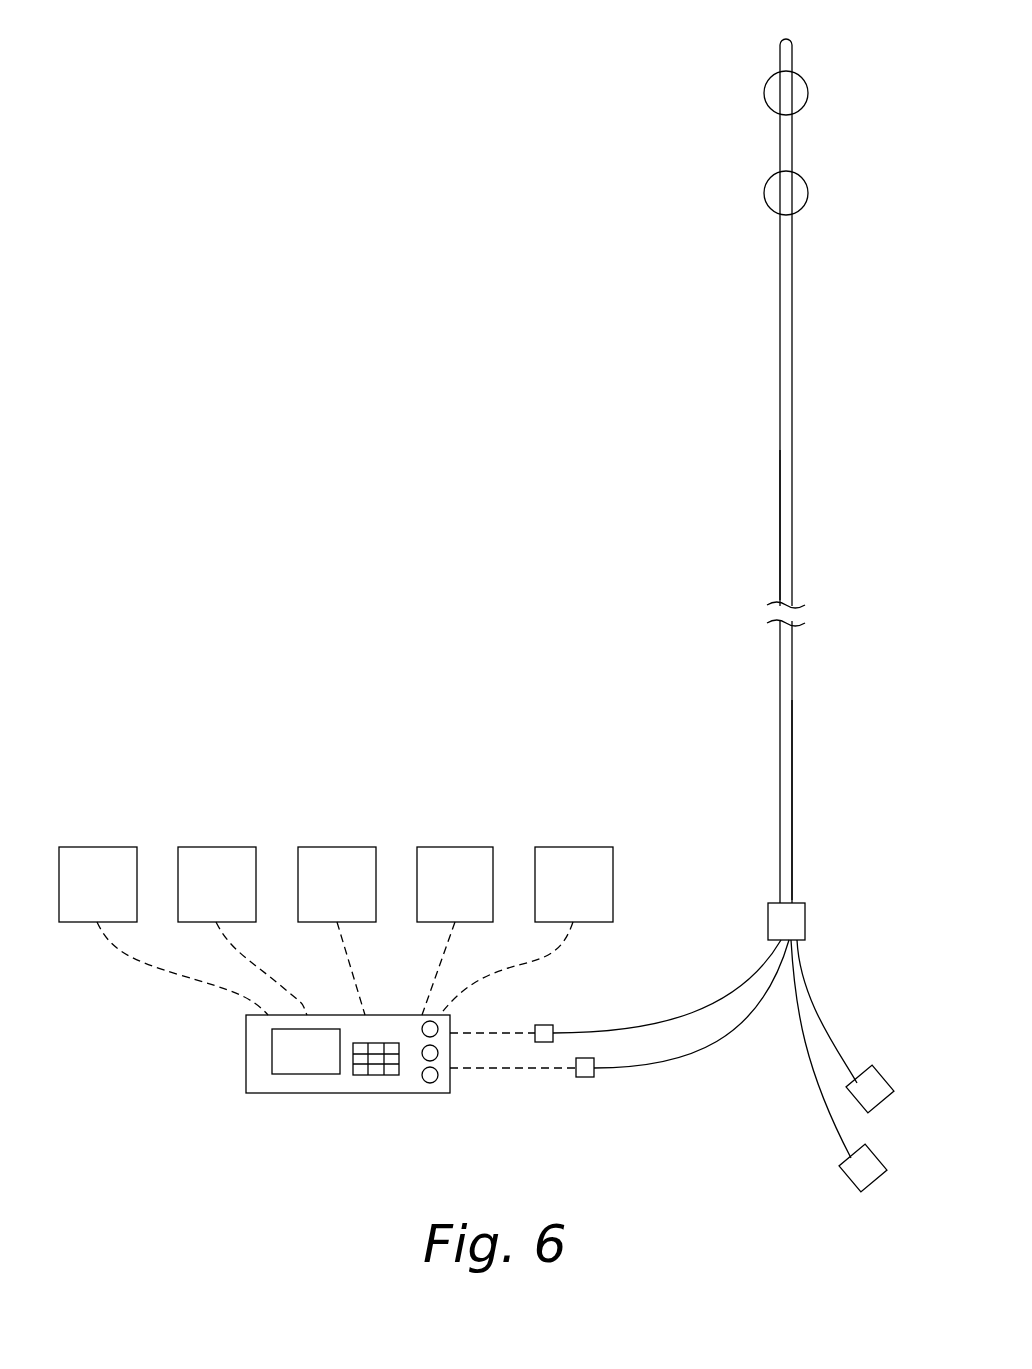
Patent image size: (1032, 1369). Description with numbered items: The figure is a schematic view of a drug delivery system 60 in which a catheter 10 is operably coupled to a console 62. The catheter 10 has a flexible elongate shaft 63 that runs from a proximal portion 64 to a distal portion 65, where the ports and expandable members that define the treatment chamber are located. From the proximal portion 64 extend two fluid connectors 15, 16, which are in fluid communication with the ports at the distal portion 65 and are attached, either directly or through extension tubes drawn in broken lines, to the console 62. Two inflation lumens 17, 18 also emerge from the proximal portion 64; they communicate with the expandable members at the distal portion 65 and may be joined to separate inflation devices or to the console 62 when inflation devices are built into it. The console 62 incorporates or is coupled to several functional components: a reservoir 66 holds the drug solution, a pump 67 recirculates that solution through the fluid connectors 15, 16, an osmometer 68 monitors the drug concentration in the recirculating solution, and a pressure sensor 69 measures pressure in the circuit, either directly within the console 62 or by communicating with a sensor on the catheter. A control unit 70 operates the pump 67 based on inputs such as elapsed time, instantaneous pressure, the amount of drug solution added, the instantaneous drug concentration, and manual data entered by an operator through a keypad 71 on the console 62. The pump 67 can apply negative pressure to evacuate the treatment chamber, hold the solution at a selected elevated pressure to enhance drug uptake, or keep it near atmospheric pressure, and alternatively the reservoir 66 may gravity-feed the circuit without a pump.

The catheter 10 is at (778, 368).
The fluid connector 15 is at (545, 1025).
The fluid connector 16 is at (586, 1078).
The inflation lumen 17 is at (833, 1033).
The inflation lumen 18 is at (820, 1110).
The drug delivery system 60 is at (515, 772).
The console 62 is at (302, 1093).
The flexible elongate shaft 63 is at (778, 522).
The proximal portion 64 is at (779, 850).
The distal portion 65 is at (737, 150).
The reservoir 66 is at (113, 897).
The pump 67 is at (232, 897).
The osmometer 68 is at (352, 897).
The pressure sensor 69 is at (470, 897).
The control unit 70 is at (589, 897).
The keypad 71 is at (378, 1077).